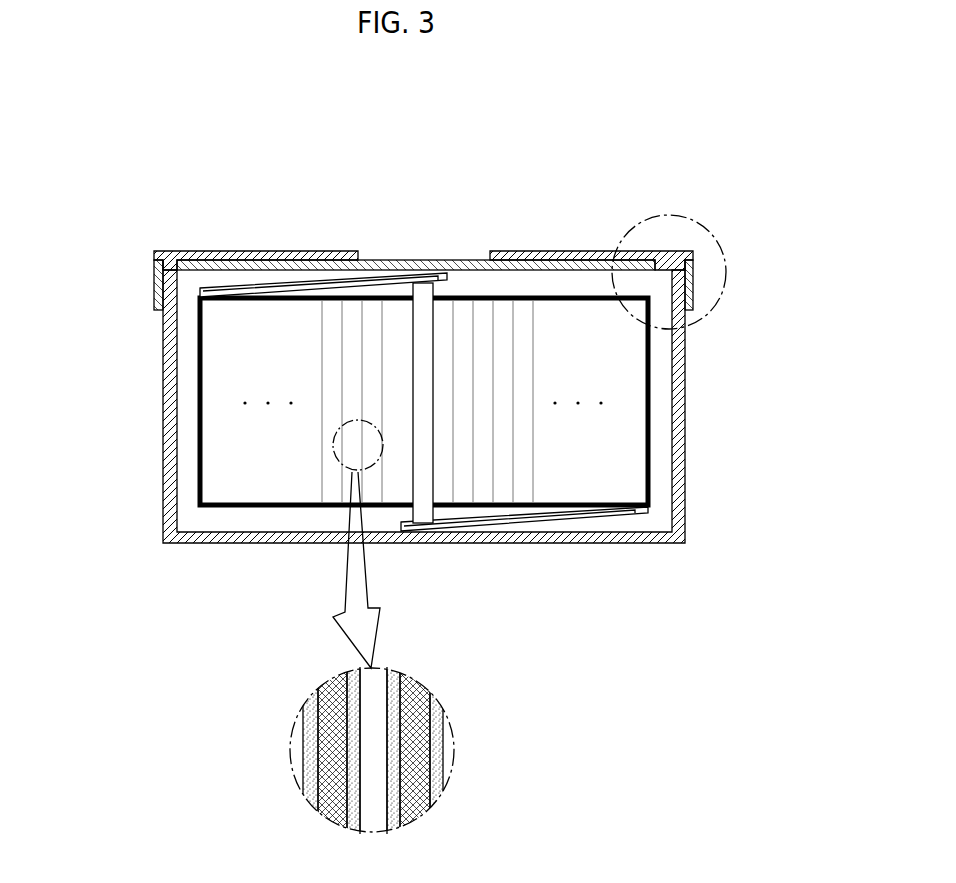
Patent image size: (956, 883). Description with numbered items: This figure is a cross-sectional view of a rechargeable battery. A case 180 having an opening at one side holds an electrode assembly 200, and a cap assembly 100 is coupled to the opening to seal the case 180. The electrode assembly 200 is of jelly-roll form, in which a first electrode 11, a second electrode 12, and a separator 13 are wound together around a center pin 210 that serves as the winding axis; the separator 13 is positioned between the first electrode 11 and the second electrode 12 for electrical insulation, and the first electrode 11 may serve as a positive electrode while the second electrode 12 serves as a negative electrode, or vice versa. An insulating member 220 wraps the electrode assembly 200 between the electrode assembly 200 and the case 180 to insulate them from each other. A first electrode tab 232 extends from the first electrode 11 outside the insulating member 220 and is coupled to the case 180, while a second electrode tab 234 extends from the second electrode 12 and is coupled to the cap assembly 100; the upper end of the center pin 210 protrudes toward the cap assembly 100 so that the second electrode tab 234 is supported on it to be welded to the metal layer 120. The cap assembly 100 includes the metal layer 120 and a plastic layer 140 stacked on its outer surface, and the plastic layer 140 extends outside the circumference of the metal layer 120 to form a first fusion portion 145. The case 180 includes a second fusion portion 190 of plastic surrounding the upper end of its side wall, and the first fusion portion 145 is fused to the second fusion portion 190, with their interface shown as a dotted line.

The cap assembly 100 is at (150, 238).
The metal layer 120 is at (420, 264).
The plastic layer 140 is at (572, 250).
The first fusion portion 145 is at (683, 263).
The second fusion portion 190 is at (690, 295).
The case 180 is at (685, 420).
The insulating member 220 is at (197, 416).
The electrode assembly 200 is at (287, 487).
The center pin 210 is at (418, 480).
The second electrode tab 234 is at (296, 290).
The first electrode tab 232 is at (577, 518).
The first electrode 11 is at (407, 707).
The second electrode 12 is at (390, 778).
The separator 13 is at (356, 829).